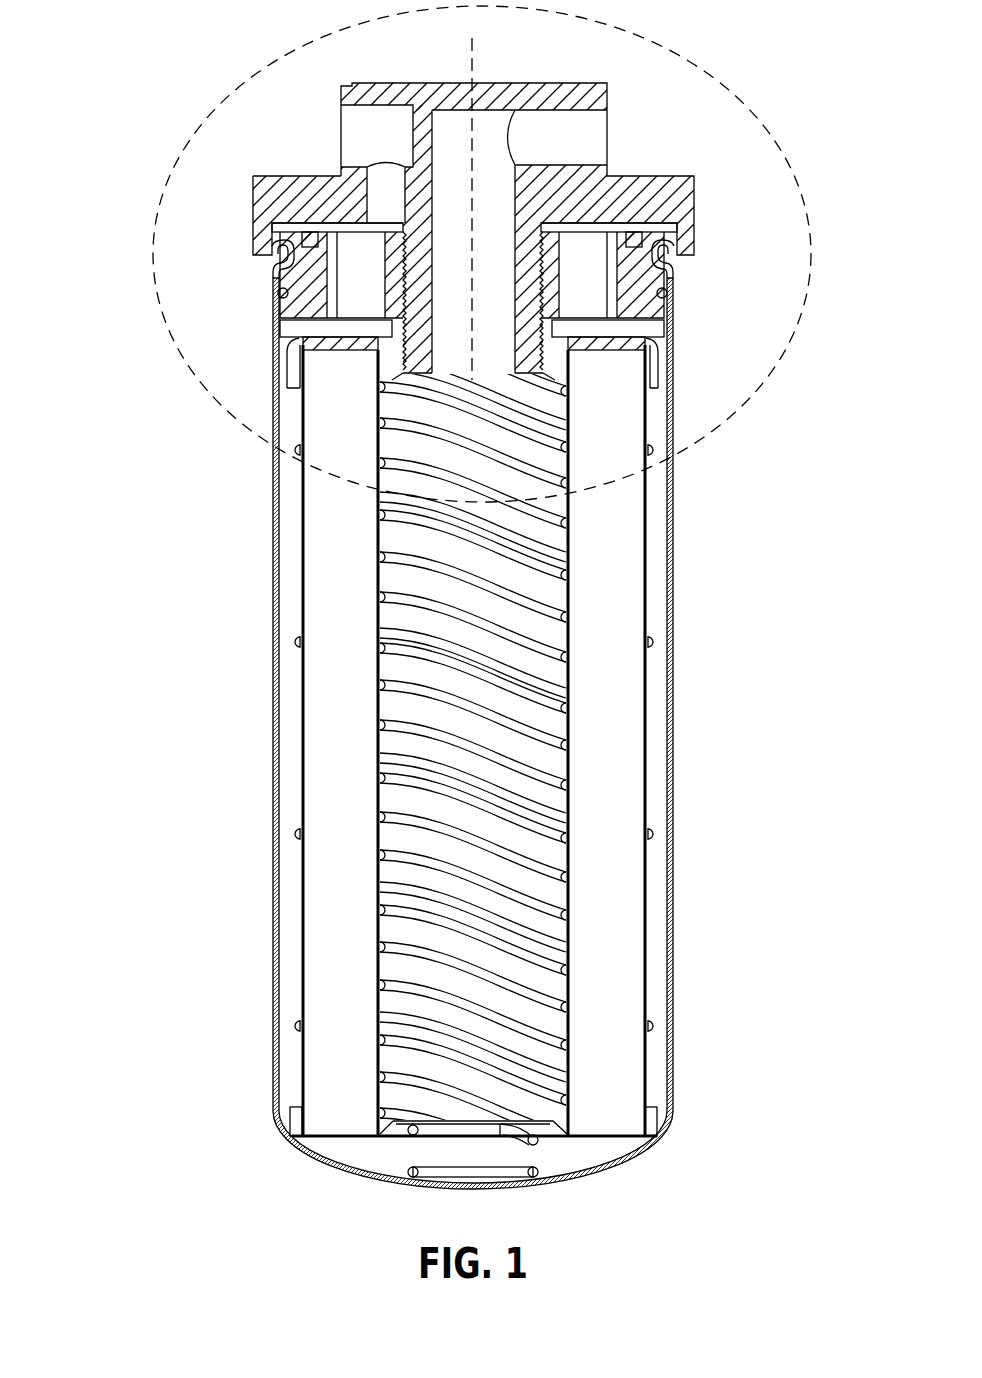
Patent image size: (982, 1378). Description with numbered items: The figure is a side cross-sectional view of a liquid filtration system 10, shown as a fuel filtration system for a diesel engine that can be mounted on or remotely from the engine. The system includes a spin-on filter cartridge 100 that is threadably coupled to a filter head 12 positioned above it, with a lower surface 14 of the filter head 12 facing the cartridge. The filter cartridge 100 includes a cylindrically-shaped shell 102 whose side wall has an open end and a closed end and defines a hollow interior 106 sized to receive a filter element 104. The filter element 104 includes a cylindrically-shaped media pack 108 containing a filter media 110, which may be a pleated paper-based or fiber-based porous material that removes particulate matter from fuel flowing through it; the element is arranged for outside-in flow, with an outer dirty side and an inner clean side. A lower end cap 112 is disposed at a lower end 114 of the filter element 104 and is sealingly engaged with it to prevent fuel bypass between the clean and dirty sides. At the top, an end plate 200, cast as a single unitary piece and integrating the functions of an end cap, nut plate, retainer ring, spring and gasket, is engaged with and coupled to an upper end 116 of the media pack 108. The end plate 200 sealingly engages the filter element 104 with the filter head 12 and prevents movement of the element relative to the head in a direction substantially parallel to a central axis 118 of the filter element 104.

The liquid filtration system 10 is at (226, 75).
The filter head 12 is at (630, 137).
The lower surface 14 is at (350, 228).
The spin-on filter cartridge 100 is at (170, 638).
The shell 102 is at (273, 533).
The filter element 104 is at (298, 702).
The hollow interior 106 is at (276, 882).
The media pack 108 is at (625, 540).
The filter media 110 is at (300, 1080).
The lower end cap 112 is at (404, 1113).
The lower end 114 is at (568, 1150).
The upper end 116 is at (597, 333).
The central axis 118 is at (470, 62).
The end plate 200 is at (660, 364).